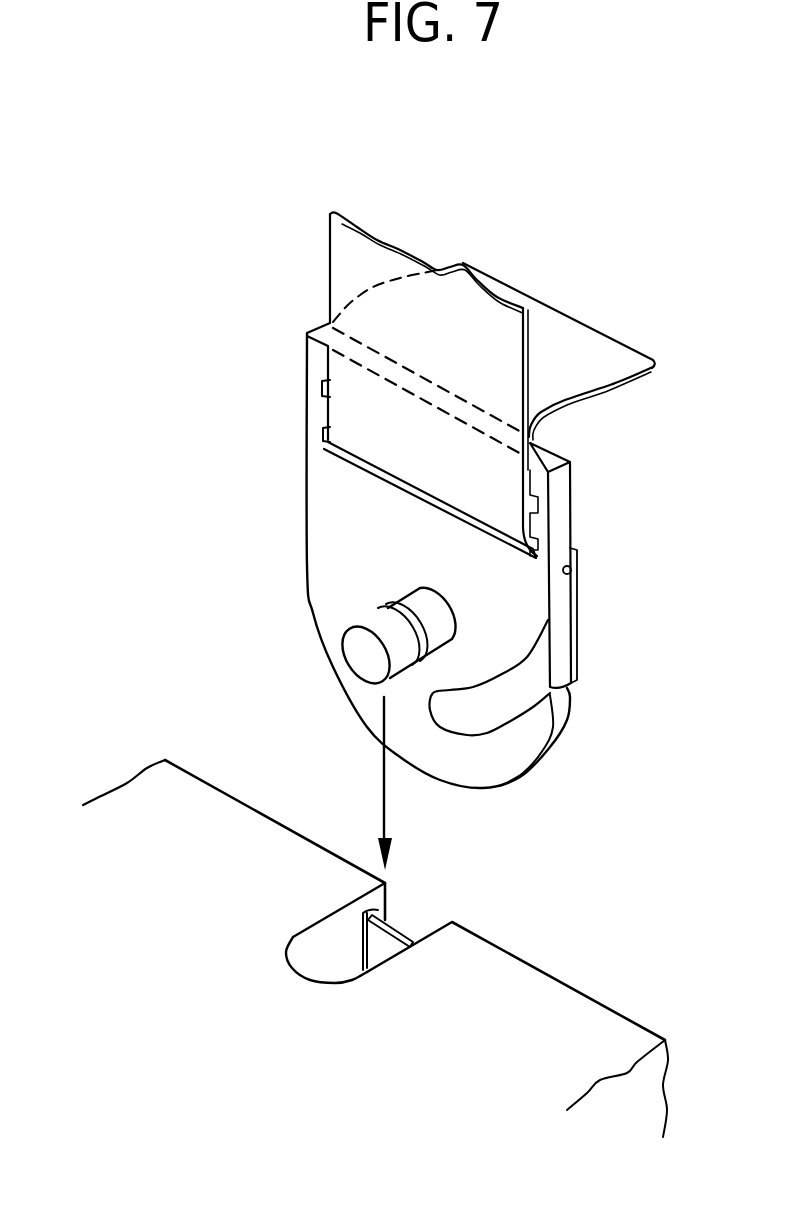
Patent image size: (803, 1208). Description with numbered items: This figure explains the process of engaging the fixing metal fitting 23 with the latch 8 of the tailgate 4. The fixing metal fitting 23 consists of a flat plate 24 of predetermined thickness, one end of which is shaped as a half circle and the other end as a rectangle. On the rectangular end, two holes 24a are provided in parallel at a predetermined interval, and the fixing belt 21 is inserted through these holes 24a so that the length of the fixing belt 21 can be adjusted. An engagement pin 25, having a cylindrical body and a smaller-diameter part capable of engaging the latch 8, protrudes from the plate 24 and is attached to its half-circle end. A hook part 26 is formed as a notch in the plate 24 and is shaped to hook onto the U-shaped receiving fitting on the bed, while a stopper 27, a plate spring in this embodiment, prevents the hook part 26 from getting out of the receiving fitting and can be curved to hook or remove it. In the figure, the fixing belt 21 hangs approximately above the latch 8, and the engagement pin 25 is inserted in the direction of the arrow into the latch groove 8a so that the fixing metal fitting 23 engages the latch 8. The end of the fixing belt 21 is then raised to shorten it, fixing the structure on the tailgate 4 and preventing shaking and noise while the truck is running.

The fixing belt 21 is at (350, 260).
The fixing metal fitting 23 is at (330, 508).
The plate 24 is at (332, 583).
The hole 24a is at (322, 388).
The engagement pin 25 is at (352, 660).
The hook part 26 is at (450, 718).
The stopper 27 is at (574, 658).
The tailgate 4 is at (553, 1027).
The latch 8 is at (400, 921).
The latch groove 8a is at (317, 950).